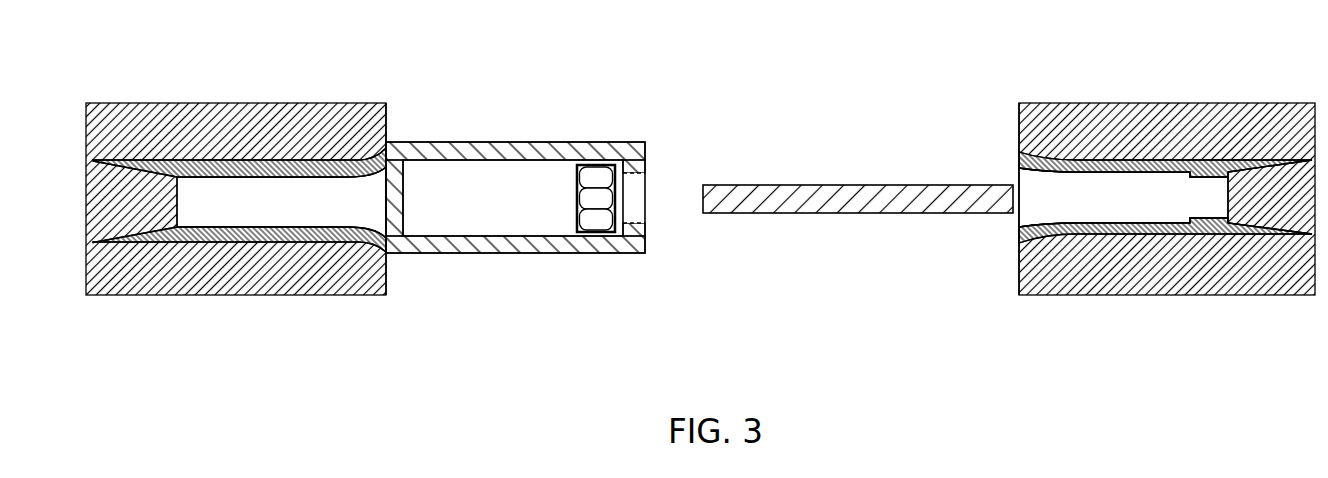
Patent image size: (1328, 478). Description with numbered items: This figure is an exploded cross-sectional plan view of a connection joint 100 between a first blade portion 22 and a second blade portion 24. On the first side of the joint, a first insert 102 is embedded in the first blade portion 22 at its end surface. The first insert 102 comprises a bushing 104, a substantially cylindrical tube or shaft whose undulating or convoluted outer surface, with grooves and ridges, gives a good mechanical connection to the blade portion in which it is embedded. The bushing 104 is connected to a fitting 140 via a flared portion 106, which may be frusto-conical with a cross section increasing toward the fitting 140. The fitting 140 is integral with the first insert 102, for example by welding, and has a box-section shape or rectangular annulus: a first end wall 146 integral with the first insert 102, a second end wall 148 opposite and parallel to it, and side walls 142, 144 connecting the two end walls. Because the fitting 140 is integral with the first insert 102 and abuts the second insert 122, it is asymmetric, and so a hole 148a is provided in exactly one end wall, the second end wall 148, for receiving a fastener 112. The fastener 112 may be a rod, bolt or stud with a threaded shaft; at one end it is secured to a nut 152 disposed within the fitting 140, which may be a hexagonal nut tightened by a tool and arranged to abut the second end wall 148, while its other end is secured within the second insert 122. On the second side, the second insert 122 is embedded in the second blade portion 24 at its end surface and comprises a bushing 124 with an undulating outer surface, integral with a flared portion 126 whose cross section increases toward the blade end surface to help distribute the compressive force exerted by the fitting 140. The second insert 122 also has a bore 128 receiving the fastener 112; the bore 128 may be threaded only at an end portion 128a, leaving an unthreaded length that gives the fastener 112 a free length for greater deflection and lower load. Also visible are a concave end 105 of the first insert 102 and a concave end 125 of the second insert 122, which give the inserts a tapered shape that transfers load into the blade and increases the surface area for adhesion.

The first blade portion 22 is at (284, 207).
The second blade portion 24 is at (1110, 249).
The connection joint 100 is at (858, 151).
The first insert 102 is at (291, 280).
The bushing 104 is at (230, 238).
The concave end 105 is at (132, 232).
The flared portion 106 is at (388, 143).
The fastener 112 is at (807, 214).
The second insert 122 is at (999, 256).
The bushing 124 is at (1140, 232).
The concave end 125 is at (1256, 207).
The flared portion 126 is at (1019, 152).
The bore 128 is at (1038, 178).
The end portion 128a is at (1212, 177).
The fitting 140 is at (563, 209).
The side wall 142 is at (543, 246).
The side wall 144 is at (517, 152).
The first end wall 146 is at (390, 230).
The second end wall 148 is at (681, 191).
The hole 148a is at (637, 205).
The nut 152 is at (594, 176).